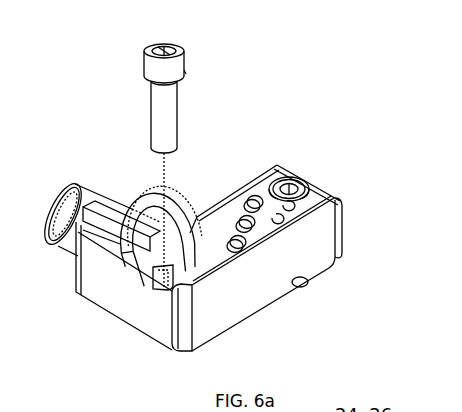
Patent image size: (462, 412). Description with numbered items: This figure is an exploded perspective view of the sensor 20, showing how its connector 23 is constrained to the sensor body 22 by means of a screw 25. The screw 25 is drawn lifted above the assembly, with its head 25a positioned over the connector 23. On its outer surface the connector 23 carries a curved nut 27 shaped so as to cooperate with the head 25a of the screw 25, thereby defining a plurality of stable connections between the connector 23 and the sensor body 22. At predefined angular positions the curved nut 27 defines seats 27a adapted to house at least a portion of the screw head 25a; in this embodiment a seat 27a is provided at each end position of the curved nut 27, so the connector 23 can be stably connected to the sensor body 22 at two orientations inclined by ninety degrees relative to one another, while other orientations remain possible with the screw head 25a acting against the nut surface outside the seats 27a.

The sensor 20 is at (282, 111).
The sensor body 22 is at (323, 236).
The connector 23 is at (92, 196).
The screw 25 is at (151, 101).
The screw head 25a is at (186, 72).
The curved nut 27 is at (141, 243).
The seat 27a is at (127, 214).